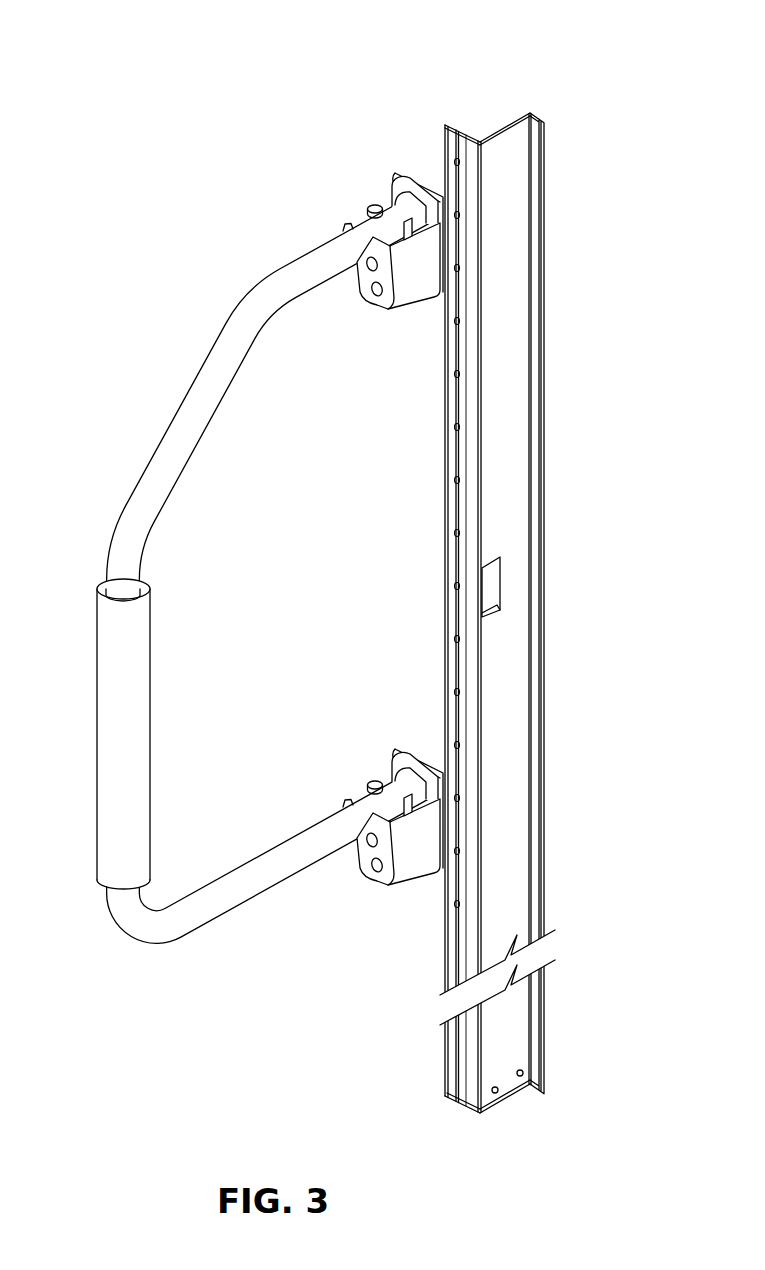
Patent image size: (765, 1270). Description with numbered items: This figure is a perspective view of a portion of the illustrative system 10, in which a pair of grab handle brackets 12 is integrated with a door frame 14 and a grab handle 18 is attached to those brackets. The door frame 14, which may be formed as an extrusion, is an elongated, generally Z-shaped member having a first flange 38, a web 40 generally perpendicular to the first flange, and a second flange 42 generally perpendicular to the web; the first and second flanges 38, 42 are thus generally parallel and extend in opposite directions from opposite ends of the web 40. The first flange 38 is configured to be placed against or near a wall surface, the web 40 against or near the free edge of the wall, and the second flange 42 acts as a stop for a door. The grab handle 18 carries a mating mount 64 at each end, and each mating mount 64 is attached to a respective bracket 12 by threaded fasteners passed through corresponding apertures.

The system 10 is at (245, 567).
The grab handle bracket 12 is at (391, 551).
The door frame 14 is at (547, 560).
The grab handle 18 is at (131, 923).
The first flange 38 is at (448, 125).
The web 40 is at (517, 240).
The second flange 42 is at (538, 117).
The mating mount 64 is at (408, 278).